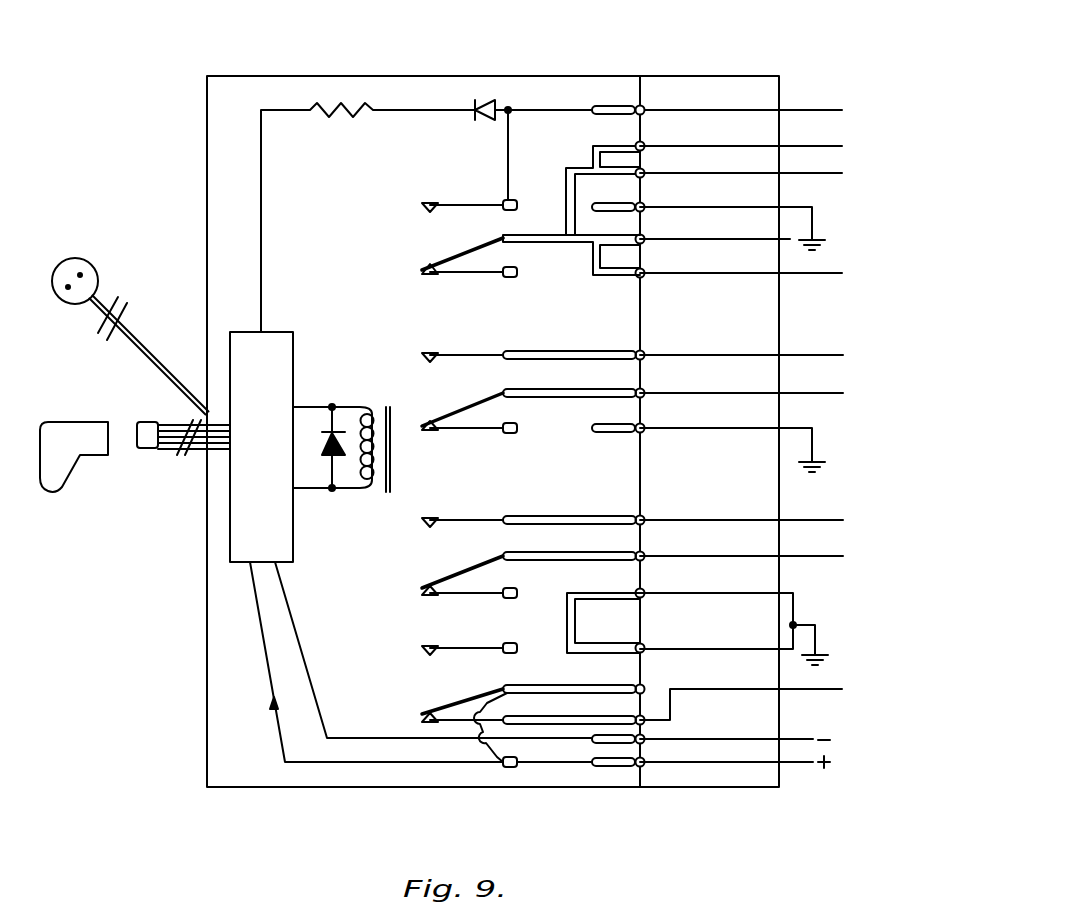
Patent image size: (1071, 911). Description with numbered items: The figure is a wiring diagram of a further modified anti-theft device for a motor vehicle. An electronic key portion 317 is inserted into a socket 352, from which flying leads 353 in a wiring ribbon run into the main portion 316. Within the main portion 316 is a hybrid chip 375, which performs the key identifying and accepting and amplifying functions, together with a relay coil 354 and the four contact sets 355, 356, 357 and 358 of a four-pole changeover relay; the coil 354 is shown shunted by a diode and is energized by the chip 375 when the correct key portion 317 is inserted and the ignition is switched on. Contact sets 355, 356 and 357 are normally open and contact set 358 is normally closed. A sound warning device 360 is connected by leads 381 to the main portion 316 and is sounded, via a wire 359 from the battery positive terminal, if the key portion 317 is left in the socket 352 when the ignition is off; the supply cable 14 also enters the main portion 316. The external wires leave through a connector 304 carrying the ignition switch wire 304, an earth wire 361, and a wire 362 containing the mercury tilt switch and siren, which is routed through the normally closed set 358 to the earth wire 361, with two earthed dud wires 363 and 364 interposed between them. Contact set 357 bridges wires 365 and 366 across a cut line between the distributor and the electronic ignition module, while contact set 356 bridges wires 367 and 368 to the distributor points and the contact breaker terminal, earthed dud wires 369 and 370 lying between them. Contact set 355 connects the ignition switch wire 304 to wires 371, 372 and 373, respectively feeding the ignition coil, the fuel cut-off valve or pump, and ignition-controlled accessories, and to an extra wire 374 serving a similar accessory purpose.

The supply cable 14 is at (265, 662).
The ignition switch wire 304 is at (672, 110).
The main portion 316 is at (250, 85).
The electronic key portion 317 is at (67, 430).
The socket 352 is at (137, 447).
The flying leads 353 is at (195, 453).
The relay coil 354 is at (360, 418).
The normally open contact set 355 is at (455, 233).
The normally open contact set 356 is at (445, 392).
The normally open contact set 357 is at (453, 545).
The normally closed contact set 358 is at (453, 678).
The battery positive wire 359 is at (757, 763).
The sound warning device 360 is at (88, 268).
The earth wire 361 is at (743, 740).
The siren supply wire 362 is at (698, 692).
The earthed dud wire 363 is at (747, 592).
The earthed dud wire 364 is at (712, 648).
The ignition module wire 365 is at (699, 518).
The ignition module wire 366 is at (723, 553).
The distributor points wire 367 is at (723, 392).
The contact breaker wire 368 is at (700, 354).
The earthed dud wire 369 is at (757, 427).
The earthed dud wire 370 is at (680, 208).
The ignition coil switch wire 371 is at (722, 240).
The fuel valve wire 372 is at (720, 146).
The accessories wire 373 is at (755, 173).
The extra wire 374 is at (762, 276).
The hybrid chip 375 is at (230, 543).
The leads 381 is at (137, 337).